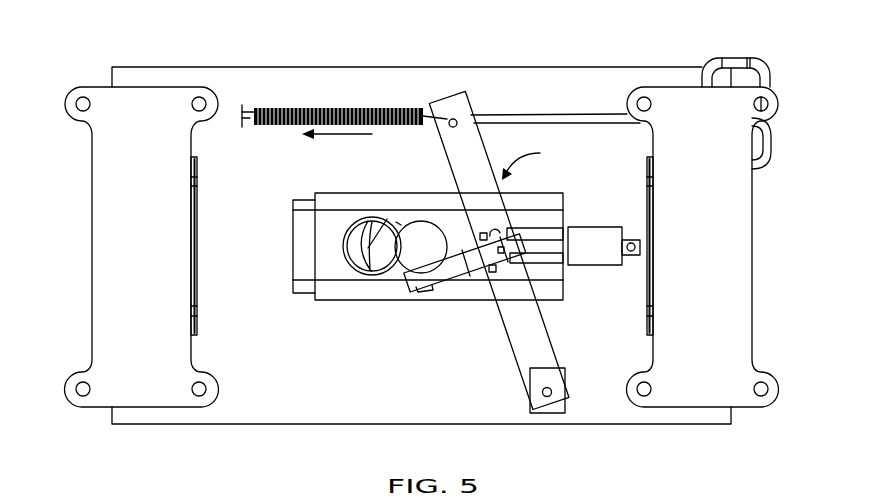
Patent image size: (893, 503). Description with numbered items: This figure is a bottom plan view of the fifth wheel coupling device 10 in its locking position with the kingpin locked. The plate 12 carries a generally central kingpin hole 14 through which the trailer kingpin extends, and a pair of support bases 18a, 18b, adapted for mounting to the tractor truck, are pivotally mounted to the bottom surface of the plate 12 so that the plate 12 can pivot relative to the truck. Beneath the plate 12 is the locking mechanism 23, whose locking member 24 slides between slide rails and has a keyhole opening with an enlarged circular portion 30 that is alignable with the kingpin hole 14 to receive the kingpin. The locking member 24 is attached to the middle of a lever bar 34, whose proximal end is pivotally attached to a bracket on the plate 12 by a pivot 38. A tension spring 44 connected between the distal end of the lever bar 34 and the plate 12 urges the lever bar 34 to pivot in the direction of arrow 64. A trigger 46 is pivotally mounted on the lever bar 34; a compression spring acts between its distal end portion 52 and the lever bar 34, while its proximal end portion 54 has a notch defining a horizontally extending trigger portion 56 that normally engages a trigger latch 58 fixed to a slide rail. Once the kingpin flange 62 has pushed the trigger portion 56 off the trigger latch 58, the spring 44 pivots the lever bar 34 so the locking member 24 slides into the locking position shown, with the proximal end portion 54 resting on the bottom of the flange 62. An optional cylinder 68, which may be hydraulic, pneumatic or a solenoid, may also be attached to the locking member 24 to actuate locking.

The fifth wheel coupling device 10 is at (479, 31).
The plate 12 is at (282, 405).
The kingpin hole 14 is at (390, 216).
The support base 18a is at (735, 272).
The support base 18b is at (105, 272).
The locking mechanism 23 is at (535, 161).
The locking member 24 is at (310, 243).
The enlarged circular portion 30 is at (350, 272).
The lever bar 34 is at (537, 343).
The pivot 38 is at (547, 401).
The tension spring 44 is at (375, 105).
The trigger 46 is at (458, 258).
The distal end portion 52 is at (502, 250).
The proximal end portion 54 is at (400, 290).
The trigger portion 56 is at (414, 291).
The trigger latch 58 is at (473, 277).
The flange 62 is at (412, 230).
The arrow 64 is at (330, 138).
The cylinder 68 is at (592, 228).